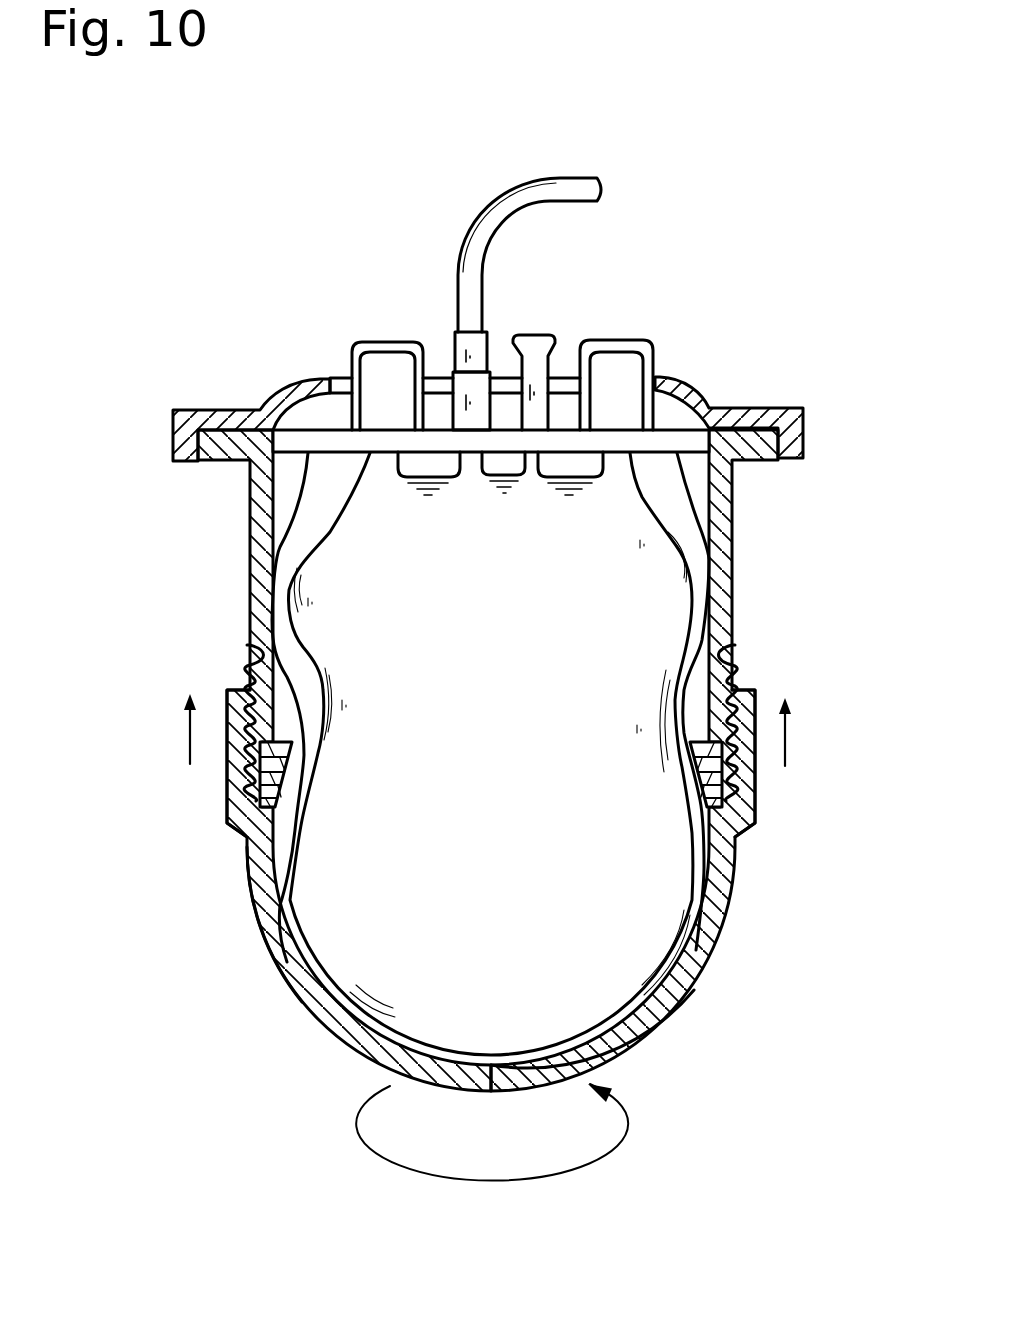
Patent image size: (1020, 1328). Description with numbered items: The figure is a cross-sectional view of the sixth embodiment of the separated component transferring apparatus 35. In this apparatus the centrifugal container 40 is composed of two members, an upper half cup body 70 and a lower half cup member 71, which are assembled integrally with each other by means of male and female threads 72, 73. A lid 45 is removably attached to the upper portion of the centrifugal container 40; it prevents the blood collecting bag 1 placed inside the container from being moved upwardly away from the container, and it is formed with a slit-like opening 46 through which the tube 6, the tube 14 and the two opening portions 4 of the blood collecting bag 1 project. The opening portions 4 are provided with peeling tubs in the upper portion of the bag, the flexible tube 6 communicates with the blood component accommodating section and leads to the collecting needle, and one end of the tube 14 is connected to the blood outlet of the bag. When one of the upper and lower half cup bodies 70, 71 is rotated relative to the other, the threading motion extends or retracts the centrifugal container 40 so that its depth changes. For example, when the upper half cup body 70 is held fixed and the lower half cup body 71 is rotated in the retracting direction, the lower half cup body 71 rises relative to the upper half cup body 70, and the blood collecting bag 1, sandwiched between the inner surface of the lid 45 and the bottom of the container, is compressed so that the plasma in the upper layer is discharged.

The blood collecting bag 1 is at (578, 647).
The opening portions 4 is at (382, 372).
The flexible tube 6 is at (538, 362).
The tube 14 is at (532, 196).
The separated component transferring apparatus 35 is at (803, 208).
The centrifugal container 40 is at (274, 969).
The lid 45 is at (285, 395).
The slit-like opening 46 is at (660, 378).
The upper half cup body 70 is at (730, 566).
The lower half cup body 71 is at (712, 917).
The male thread 72 is at (247, 670).
The female thread 73 is at (249, 812).